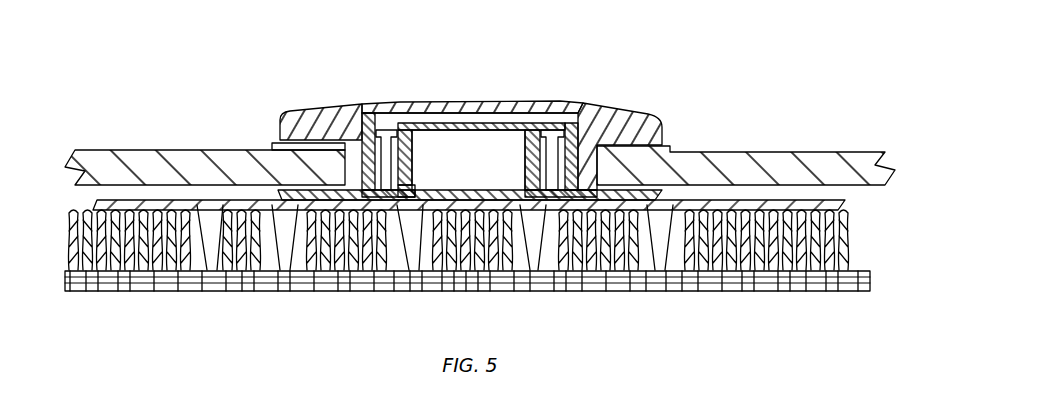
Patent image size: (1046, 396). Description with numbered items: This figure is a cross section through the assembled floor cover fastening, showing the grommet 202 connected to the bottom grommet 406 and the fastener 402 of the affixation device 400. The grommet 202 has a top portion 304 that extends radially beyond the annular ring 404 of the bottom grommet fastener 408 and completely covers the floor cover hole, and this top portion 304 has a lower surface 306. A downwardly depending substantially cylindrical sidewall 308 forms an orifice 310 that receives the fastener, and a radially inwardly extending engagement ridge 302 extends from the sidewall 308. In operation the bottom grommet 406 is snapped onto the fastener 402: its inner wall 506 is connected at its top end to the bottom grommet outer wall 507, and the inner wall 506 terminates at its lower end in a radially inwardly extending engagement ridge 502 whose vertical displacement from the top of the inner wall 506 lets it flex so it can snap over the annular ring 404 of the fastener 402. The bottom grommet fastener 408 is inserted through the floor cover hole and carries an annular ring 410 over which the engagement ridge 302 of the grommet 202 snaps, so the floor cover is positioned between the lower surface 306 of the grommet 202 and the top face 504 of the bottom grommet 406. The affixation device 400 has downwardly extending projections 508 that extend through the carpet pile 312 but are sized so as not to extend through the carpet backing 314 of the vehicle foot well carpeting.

The grommet 202 is at (472, 101).
The engagement ridge 302 is at (469, 124).
The top portion 304 is at (290, 125).
The lower surface 306 is at (278, 146).
The cylindrical sidewall 308 is at (377, 112).
The orifice 310 is at (478, 111).
The carpet pile 312 is at (366, 248).
The carpet backing 314 is at (460, 270).
The affixation device 400 is at (189, 193).
The fastener 402 is at (490, 126).
The annular ring 404 is at (528, 167).
The bottom grommet 406 is at (262, 172).
The bottom grommet fastener 408 is at (388, 130).
The annular ring 410 is at (622, 112).
The engagement ridge 502 is at (406, 184).
The top face 504 is at (292, 132).
The inner wall 506 is at (540, 130).
The outer wall 507 is at (578, 130).
The projections 508 is at (172, 253).